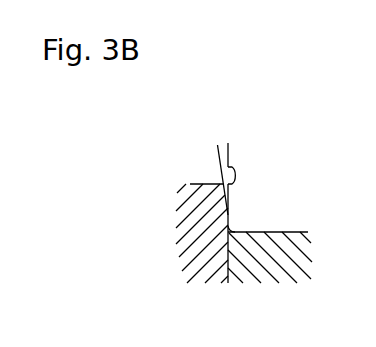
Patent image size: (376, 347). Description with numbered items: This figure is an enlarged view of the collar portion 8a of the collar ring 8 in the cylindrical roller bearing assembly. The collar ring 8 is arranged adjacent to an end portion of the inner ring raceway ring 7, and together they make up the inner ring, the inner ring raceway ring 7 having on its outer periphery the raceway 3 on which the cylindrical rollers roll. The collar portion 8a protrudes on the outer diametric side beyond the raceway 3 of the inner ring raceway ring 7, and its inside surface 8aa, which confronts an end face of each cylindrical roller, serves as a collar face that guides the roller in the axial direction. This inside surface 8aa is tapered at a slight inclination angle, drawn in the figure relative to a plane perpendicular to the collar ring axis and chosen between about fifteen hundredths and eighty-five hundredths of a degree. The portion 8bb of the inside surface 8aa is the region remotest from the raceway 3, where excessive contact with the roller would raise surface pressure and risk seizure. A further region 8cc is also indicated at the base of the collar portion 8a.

The collar ring 8 is at (172, 240).
The collar portion 8a is at (198, 181).
The inside surface 8aa is at (237, 199).
The portion of inside surface remotest from the raceway 8bb is at (221, 167).
The corner fillet 8cc is at (231, 226).
The raceway 3 is at (270, 231).
The inner ring raceway ring 7 is at (315, 240).